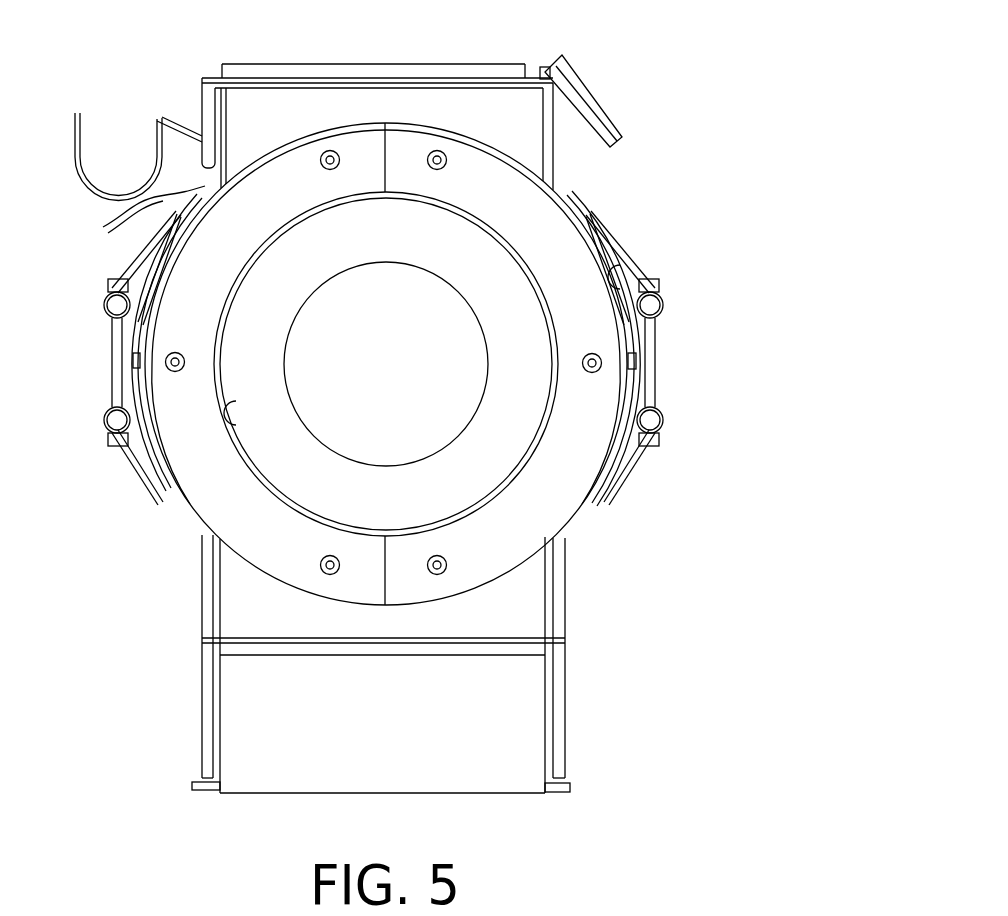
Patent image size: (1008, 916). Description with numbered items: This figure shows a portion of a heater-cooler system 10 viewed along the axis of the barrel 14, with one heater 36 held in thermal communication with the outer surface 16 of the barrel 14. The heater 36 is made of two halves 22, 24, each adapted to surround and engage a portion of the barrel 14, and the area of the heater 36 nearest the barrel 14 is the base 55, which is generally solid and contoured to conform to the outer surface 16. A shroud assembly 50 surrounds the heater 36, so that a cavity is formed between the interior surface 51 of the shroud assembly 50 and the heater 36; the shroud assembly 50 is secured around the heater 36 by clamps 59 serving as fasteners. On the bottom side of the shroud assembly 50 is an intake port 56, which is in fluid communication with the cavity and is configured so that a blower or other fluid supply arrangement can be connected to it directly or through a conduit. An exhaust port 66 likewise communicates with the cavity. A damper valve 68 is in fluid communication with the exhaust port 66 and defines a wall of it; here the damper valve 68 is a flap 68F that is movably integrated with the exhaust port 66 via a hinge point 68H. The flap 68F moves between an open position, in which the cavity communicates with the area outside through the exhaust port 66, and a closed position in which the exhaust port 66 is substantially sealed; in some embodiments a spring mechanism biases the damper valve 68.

The fan assembly 10 is at (666, 202).
The barrel 14 is at (453, 520).
The outer surface 16 is at (483, 490).
The half 22 is at (200, 502).
The half 24 is at (578, 460).
The heater 36 is at (560, 243).
The shroud assembly 50 is at (584, 163).
The interior surface 51 is at (630, 283).
The base 55 is at (238, 430).
The intake port 56 is at (303, 620).
The clamps 59 is at (116, 362).
The exhaust port 66 is at (265, 105).
The damper valve 68 is at (592, 53).
The flap 68F is at (604, 118).
The hinge point 68H is at (545, 68).